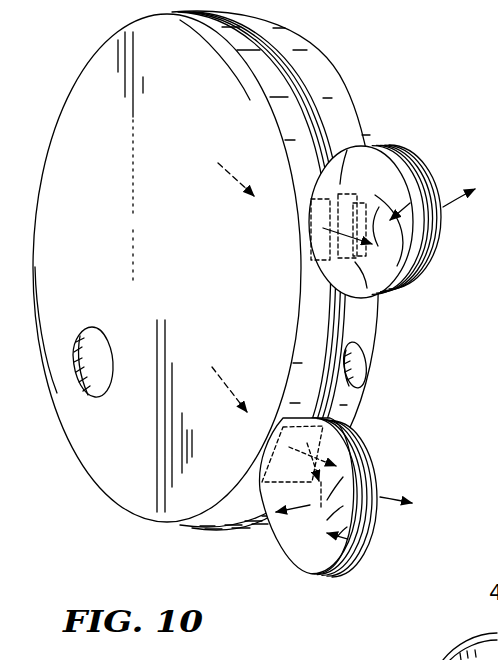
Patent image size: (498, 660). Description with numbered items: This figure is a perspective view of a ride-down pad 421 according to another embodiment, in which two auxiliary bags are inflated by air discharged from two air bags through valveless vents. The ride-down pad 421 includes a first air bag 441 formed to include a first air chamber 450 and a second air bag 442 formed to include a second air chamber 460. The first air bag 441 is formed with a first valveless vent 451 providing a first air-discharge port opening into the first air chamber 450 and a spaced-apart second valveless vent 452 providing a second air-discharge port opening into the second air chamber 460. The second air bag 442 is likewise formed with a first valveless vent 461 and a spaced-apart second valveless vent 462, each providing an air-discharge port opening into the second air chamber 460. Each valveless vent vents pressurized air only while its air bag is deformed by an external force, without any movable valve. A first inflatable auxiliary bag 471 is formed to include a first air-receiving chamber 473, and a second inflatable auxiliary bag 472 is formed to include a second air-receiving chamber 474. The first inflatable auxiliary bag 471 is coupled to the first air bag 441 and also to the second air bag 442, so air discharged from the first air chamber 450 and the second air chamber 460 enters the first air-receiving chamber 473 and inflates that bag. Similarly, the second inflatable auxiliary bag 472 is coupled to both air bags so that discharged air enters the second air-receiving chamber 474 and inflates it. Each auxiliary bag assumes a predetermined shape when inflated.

The ride-down pad 421 is at (352, 69).
The first air bag 441 is at (292, 42).
The second air bag 442 is at (115, 87).
The first air chamber 450 is at (355, 360).
The first valveless vent 451 is at (366, 438).
The second valveless vent 452 is at (382, 192).
The second air chamber 460 is at (95, 361).
The first valveless vent 461 is at (254, 460).
The second valveless vent 462 is at (310, 241).
The first inflatable auxiliary bag 471 is at (388, 131).
The second inflatable auxiliary bag 472 is at (287, 565).
The first air-receiving chamber 473 is at (412, 202).
The second air-receiving chamber 474 is at (372, 546).